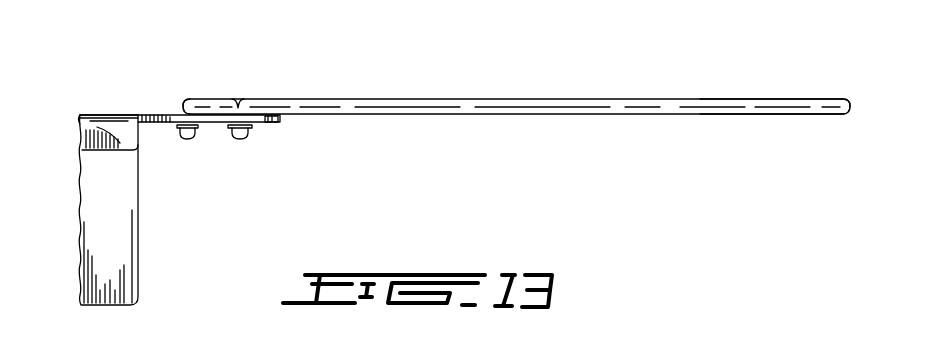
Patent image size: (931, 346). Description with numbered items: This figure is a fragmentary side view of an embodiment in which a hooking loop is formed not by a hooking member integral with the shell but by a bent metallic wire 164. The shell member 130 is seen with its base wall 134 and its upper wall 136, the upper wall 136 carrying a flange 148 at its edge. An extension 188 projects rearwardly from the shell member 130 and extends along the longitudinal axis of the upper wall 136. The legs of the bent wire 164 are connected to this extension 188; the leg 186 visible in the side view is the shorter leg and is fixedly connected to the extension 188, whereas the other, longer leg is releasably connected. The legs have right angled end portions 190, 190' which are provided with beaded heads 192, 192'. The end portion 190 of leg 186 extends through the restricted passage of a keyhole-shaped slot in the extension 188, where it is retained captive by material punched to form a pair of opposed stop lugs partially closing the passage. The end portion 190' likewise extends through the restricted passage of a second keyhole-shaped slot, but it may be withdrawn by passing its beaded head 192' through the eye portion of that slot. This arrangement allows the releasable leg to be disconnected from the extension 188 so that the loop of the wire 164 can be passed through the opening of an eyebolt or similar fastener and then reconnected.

The shell member 130 is at (141, 228).
The base wall 134 is at (115, 278).
The upper wall 136 is at (108, 113).
The flange 148 is at (82, 128).
The metallic wire 164 is at (748, 103).
The leg 186 is at (555, 105).
The extension 188 is at (275, 122).
The right angled end portion 190 is at (247, 74).
The right angled end portion 190' is at (194, 66).
The beaded head 192 is at (251, 166).
The beaded head 192' is at (180, 157).